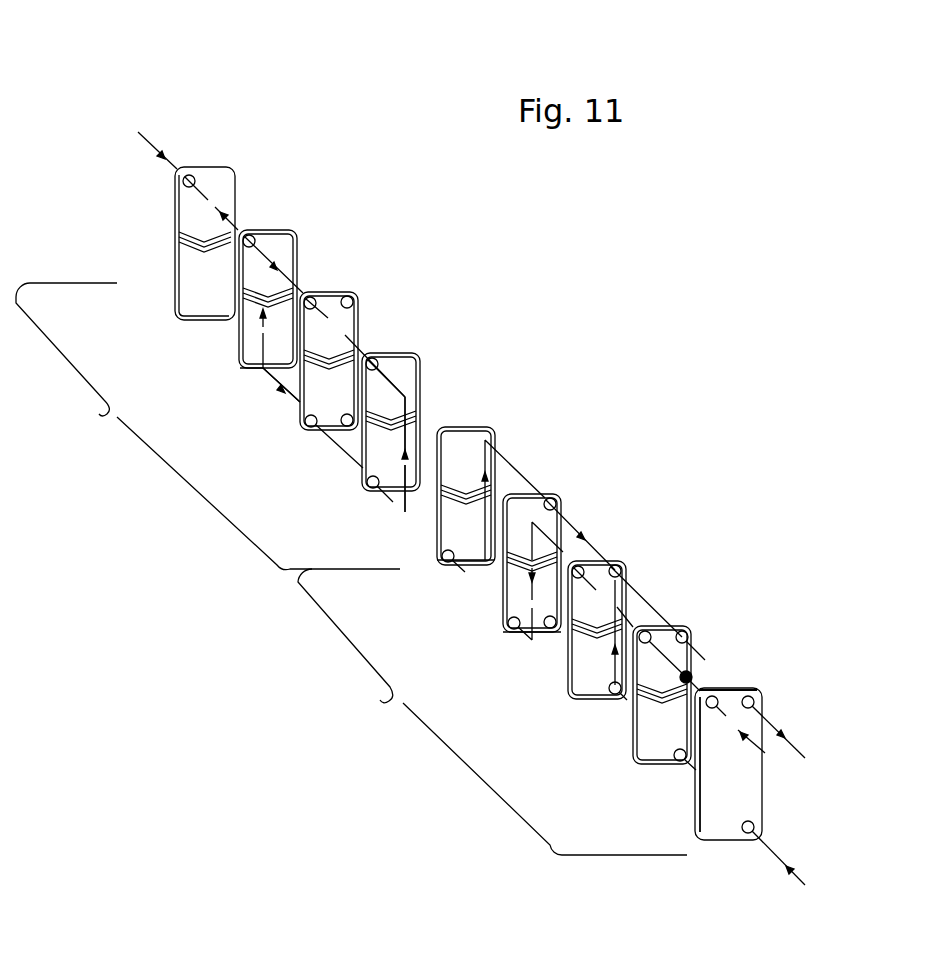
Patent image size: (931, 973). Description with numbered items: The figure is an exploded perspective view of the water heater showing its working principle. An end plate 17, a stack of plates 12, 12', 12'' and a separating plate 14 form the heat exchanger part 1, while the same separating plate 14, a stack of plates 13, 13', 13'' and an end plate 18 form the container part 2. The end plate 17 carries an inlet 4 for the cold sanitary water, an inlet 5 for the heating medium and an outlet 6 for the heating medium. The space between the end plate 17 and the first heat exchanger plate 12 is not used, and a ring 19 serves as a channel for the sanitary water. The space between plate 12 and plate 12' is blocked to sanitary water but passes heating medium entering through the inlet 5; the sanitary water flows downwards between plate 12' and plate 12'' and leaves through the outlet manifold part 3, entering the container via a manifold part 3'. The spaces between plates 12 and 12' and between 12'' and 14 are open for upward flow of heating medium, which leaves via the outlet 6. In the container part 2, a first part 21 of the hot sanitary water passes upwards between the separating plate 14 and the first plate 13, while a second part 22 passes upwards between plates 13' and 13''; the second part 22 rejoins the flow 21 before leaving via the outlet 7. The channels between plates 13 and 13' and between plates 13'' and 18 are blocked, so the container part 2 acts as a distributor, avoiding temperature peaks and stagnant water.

The heat exchanger part 1 is at (492, 712).
The container part 2 is at (208, 426).
The outlet manifold part 3 is at (475, 616).
The manifold part 3' is at (388, 532).
The inlet for cold sanitary water 4 is at (725, 688).
The inlet for heating medium 5 is at (757, 822).
The outlet for heating medium 6 is at (760, 697).
The outlet 7 is at (189, 174).
The first heat exchanger plate 12 is at (689, 664).
The heat exchanger plate 12' is at (628, 592).
The heat exchanger plate 12'' is at (561, 529).
The first plate of container part 13 is at (420, 396).
The container plate 13' is at (360, 344).
The container plate 13'' is at (300, 279).
The separating plate 14 is at (483, 438).
The end plate 17 is at (718, 785).
The end plate 18 is at (212, 188).
The ring 19 is at (697, 668).
The first part of hot sanitary water 21 is at (405, 403).
The second part of hot sanitary water 22 is at (290, 398).